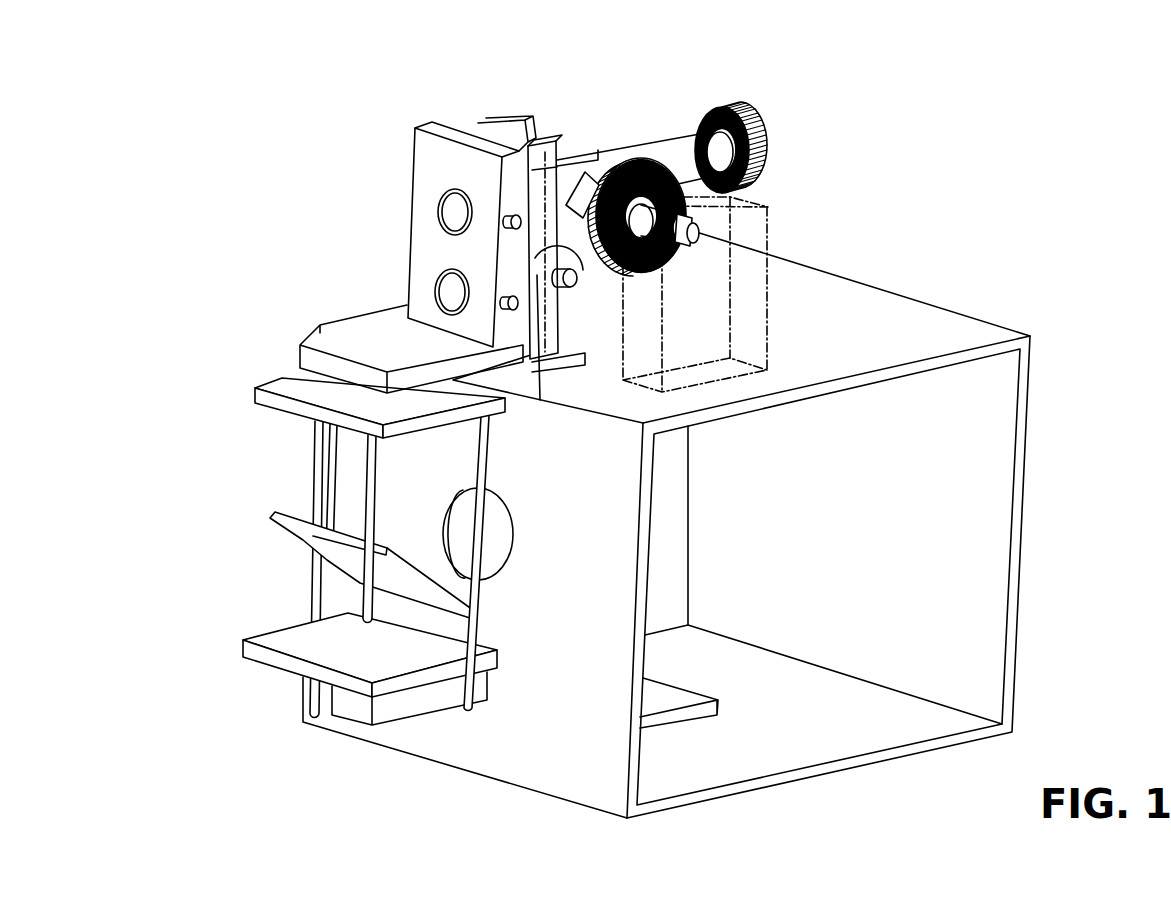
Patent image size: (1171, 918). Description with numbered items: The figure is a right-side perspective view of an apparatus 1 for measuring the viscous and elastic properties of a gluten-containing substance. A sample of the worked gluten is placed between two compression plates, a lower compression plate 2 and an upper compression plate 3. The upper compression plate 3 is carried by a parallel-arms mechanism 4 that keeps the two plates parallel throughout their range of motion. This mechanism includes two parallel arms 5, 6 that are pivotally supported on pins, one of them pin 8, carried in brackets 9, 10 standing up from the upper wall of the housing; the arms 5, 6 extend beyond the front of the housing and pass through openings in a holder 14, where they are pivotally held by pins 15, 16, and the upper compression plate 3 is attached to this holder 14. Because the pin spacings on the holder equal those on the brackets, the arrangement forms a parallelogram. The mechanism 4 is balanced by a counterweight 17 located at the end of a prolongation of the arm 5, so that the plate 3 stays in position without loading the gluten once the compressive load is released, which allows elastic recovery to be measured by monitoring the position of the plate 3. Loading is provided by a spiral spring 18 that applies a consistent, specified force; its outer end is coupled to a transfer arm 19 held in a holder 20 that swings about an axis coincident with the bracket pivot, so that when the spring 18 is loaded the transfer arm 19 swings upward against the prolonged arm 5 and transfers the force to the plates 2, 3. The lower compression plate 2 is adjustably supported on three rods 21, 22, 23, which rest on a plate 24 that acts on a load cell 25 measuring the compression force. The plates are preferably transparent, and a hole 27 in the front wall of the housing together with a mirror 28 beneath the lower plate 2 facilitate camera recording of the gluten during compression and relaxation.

The apparatus 1 is at (948, 228).
The lower compression plate 2 is at (472, 398).
The upper compression plate 3 is at (352, 350).
The parallel-arms mechanism 4 is at (452, 252).
The parallel arm 5 is at (687, 153).
The parallel arm 6 is at (543, 290).
The pin 8 is at (580, 278).
The bracket 9 is at (563, 348).
The bracket 10 is at (552, 150).
The holder 14 is at (433, 158).
The pin 15 is at (510, 220).
The pin 16 is at (540, 400).
The counterweight 17 is at (760, 112).
The spiral spring 18 is at (683, 197).
The transfer arm 19 is at (703, 237).
The holder 20 is at (586, 193).
The rod 21 is at (323, 500).
The rod 22 is at (374, 474).
The rod 23 is at (483, 455).
The plate 24 is at (287, 643).
The load cell 25 is at (408, 710).
The hole 27 is at (502, 551).
The mirror 28 is at (412, 590).